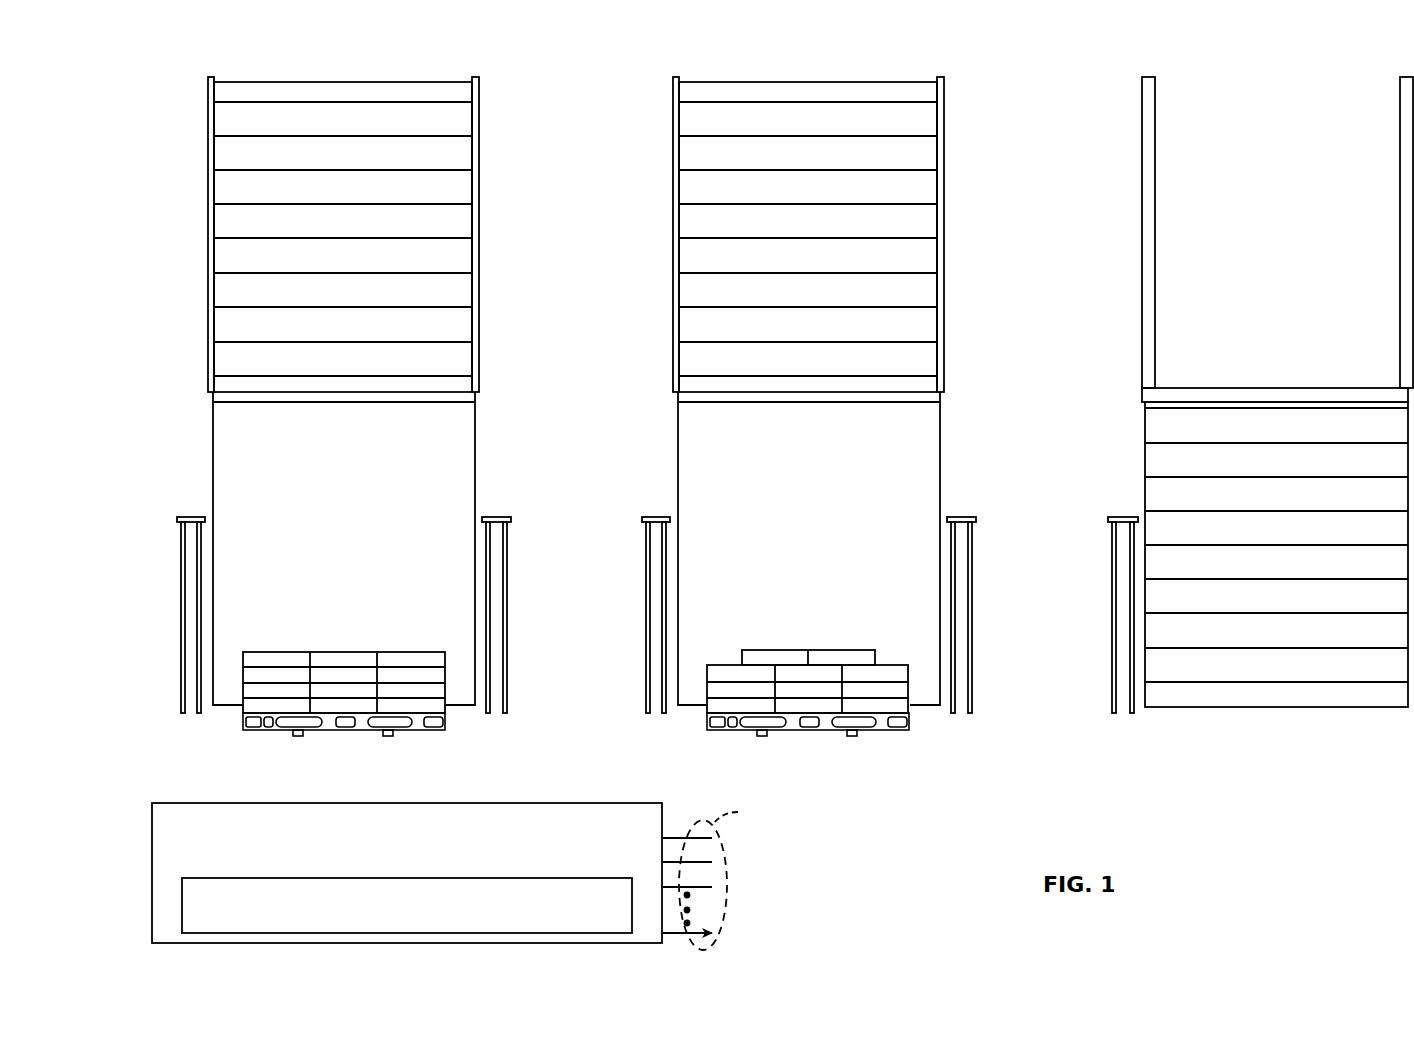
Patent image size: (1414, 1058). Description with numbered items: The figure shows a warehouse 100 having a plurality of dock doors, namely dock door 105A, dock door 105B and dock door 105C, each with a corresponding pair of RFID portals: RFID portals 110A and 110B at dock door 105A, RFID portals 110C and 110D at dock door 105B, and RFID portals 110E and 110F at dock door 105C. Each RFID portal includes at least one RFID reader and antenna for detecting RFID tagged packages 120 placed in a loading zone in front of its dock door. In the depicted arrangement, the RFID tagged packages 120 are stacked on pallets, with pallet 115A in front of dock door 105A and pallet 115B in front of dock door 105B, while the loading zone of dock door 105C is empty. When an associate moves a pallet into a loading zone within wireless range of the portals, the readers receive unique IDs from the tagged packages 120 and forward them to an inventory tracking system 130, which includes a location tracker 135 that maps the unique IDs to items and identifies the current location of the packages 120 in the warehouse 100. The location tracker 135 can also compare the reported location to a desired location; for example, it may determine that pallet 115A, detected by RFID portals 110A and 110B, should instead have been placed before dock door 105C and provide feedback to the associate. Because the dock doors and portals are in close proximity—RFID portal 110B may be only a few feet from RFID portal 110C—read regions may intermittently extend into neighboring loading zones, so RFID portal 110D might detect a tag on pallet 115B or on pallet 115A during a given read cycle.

The warehouse 100 is at (163, 117).
The dock door 105A is at (197, 428).
The dock door 105B is at (662, 428).
The dock door 105C is at (1135, 428).
The RFID portal 110A is at (193, 517).
The RFID portal 110B is at (496, 517).
The RFID portal 110C is at (658, 517).
The RFID portal 110D is at (958, 517).
The RFID portal 110E is at (1127, 517).
The RFID portal 110F is at (1413, 512).
The pallet 115A is at (421, 754).
The pallet 115B is at (901, 754).
The RFID tagged packages 120 is at (795, 617).
The inventory tracking system 130 is at (602, 803).
The location tracker 135 is at (572, 878).